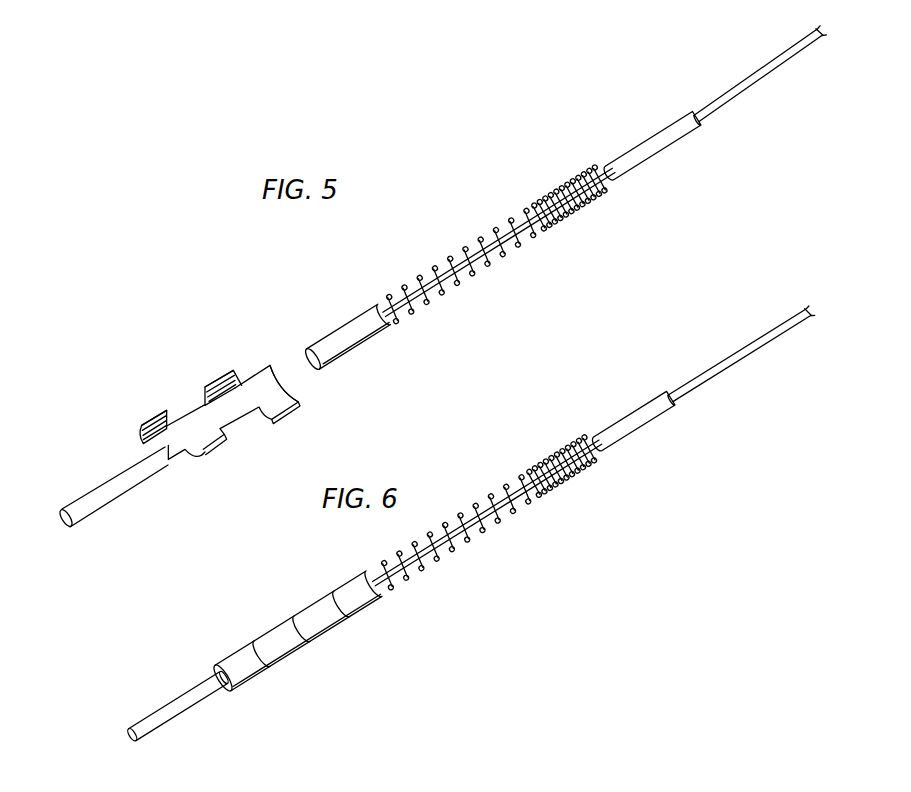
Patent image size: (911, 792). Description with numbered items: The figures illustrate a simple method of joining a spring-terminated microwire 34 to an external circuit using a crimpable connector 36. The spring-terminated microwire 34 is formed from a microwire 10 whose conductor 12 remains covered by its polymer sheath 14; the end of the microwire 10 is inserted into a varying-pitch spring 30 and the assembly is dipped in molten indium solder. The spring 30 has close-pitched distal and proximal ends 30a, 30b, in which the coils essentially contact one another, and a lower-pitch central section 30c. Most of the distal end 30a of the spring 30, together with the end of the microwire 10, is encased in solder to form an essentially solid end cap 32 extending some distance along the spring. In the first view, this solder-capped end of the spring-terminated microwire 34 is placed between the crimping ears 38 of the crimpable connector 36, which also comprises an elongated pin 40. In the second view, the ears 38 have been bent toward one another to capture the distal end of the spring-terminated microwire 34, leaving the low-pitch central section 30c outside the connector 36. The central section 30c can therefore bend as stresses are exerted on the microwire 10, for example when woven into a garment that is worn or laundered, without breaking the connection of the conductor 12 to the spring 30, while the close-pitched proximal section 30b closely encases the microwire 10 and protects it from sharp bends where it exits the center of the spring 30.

In FIG. 5, the microwire 10 is at (646, 90).
In FIG. 6, the microwire 10 is at (647, 353).
In FIG. 5, the conductor 12 is at (793, 47).
In FIG. 6, the conductor 12 is at (737, 363).
In FIG. 5, the polymer sheath 14 is at (670, 143).
In FIG. 6, the polymer sheath 14 is at (642, 427).
In FIG. 5, the varying-pitch spring 30 is at (480, 233).
In FIG. 6, the varying-pitch spring 30 is at (487, 513).
In FIG. 6, the distal end of the spring 30a is at (473, 540).
In FIG. 5, the proximal end of the spring 30b is at (587, 165).
In FIG. 6, the proximal end of the spring 30b is at (578, 442).
In FIG. 5, the central section of the spring 30c is at (497, 256).
In FIG. 5, the end cap 32 is at (353, 338).
In FIG. 5, the spring-terminated microwire 34 is at (578, 244).
In FIG. 6, the spring-terminated microwire 34 is at (468, 490).
In FIG. 5, the crimpable connector 36 is at (169, 508).
In FIG. 6, the crimpable connector 36 is at (193, 733).
In FIG. 5, the crimping ears 38 is at (204, 386).
In FIG. 6, the crimping ears 38 is at (258, 625).
In FIG. 5, the elongated pin 40 is at (92, 493).
In FIG. 6, the elongated pin 40 is at (150, 717).